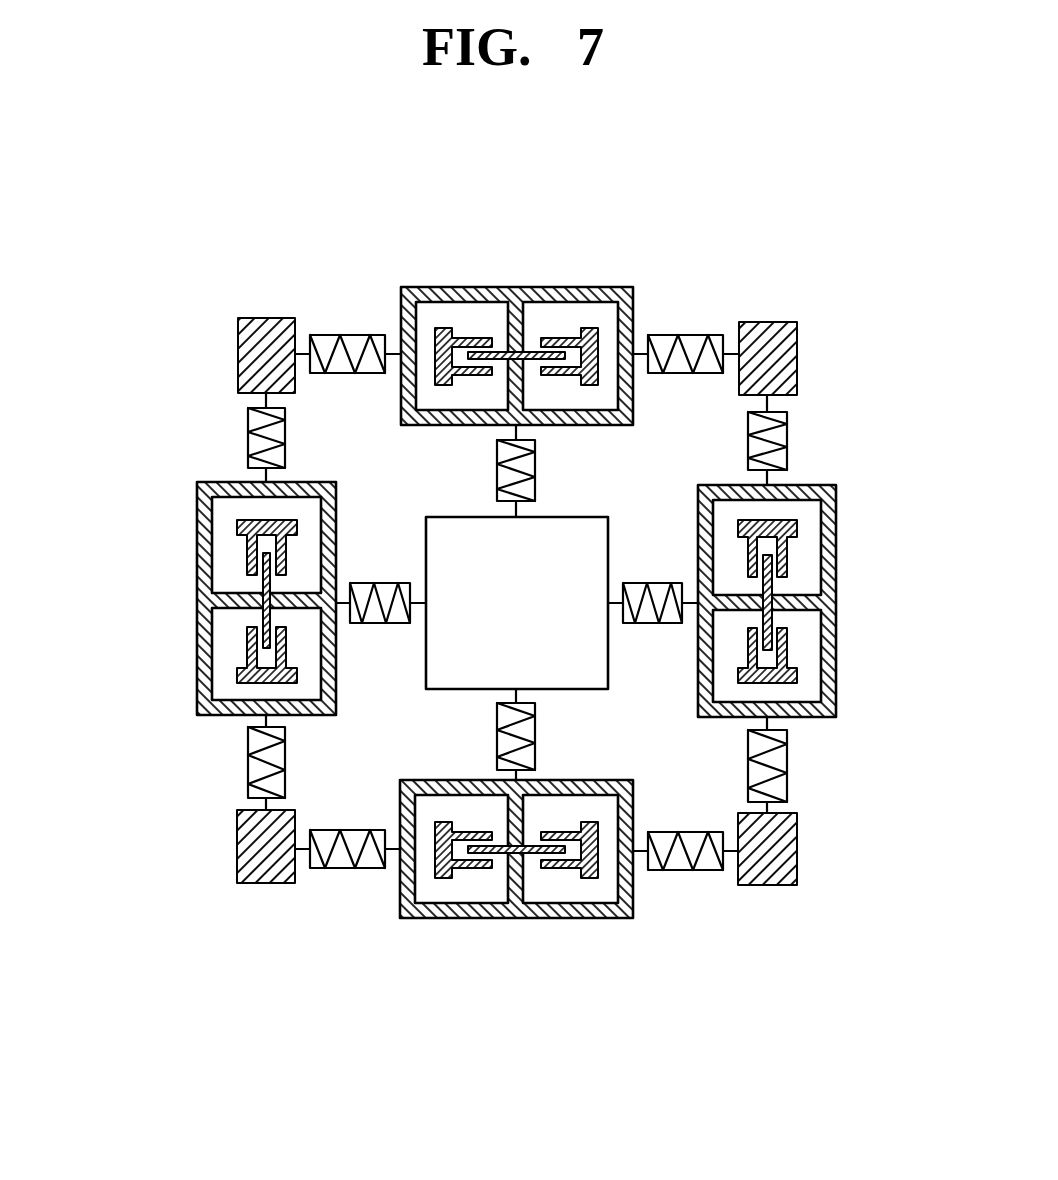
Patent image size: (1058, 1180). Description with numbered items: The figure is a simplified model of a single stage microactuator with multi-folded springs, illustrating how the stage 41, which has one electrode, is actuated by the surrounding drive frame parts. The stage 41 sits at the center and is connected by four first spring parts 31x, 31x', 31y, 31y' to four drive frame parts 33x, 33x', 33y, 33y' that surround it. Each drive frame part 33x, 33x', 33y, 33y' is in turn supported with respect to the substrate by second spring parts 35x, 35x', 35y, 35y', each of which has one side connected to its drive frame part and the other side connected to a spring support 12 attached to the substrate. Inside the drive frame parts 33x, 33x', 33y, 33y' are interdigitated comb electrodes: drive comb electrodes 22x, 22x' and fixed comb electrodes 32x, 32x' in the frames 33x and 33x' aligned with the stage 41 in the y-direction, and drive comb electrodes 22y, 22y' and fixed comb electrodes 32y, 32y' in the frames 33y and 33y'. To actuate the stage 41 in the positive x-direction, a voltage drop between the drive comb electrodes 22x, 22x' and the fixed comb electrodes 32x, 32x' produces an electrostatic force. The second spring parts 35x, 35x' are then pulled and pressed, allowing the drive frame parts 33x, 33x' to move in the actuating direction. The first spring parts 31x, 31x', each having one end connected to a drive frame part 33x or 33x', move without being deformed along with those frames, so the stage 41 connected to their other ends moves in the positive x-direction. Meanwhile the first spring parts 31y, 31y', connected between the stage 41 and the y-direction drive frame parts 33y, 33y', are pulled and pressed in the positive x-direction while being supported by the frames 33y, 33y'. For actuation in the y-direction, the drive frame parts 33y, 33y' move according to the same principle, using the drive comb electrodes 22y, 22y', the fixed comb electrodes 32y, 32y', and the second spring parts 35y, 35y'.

The spring support 12 is at (775, 330).
The stage 41 is at (536, 616).
The first spring part 31x is at (574, 470).
The first spring part 31x' is at (567, 736).
The first spring part 31y is at (380, 570).
The first spring part 31y' is at (653, 566).
The second spring part 35x is at (503, 306).
The second spring part 35x' is at (520, 899).
The second spring part 35y is at (210, 603).
The second spring part 35y' is at (823, 607).
The drive frame part 33x is at (517, 292).
The drive frame part 33x' is at (516, 924).
The drive frame part 33y is at (189, 598).
The drive frame part 33y' is at (825, 601).
The fixed comb electrode 32x is at (514, 287).
The fixed comb electrode 32x' is at (515, 908).
The fixed comb electrode 32y is at (202, 606).
The fixed comb electrode 32y' is at (834, 601).
The drive comb electrode 22x is at (516, 292).
The drive comb electrode 22x' is at (516, 921).
The drive comb electrode 22y is at (189, 600).
The drive comb electrode 22y' is at (846, 602).